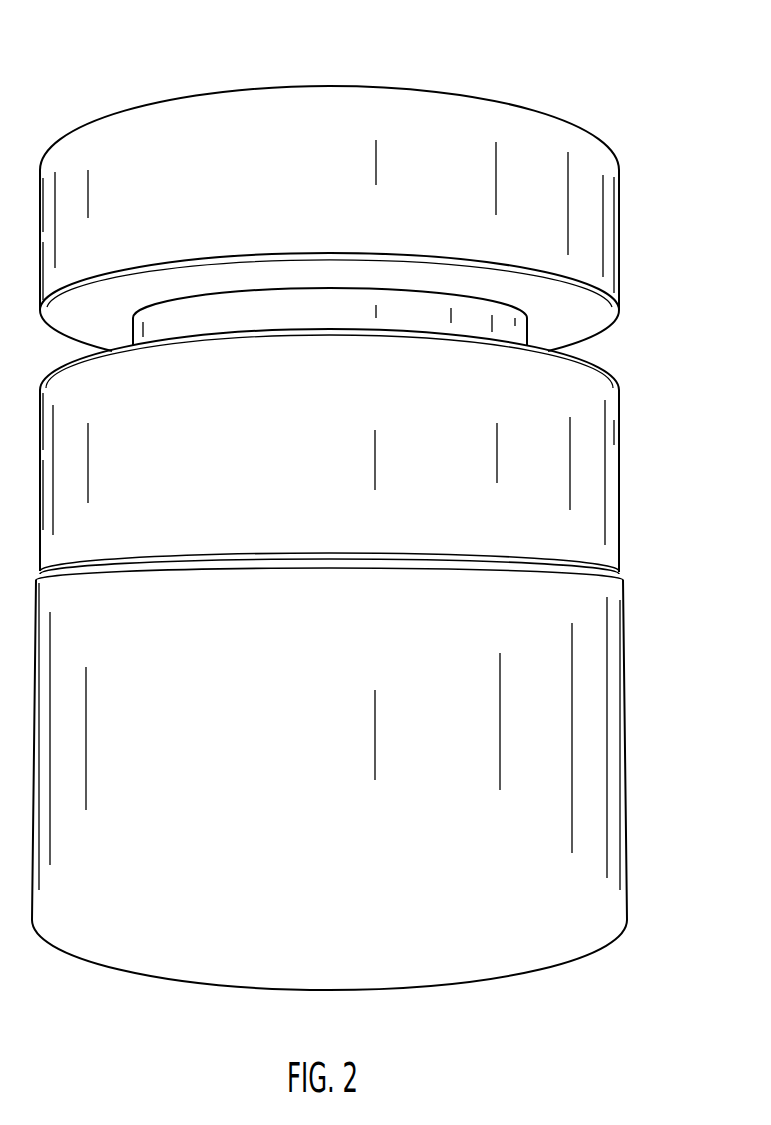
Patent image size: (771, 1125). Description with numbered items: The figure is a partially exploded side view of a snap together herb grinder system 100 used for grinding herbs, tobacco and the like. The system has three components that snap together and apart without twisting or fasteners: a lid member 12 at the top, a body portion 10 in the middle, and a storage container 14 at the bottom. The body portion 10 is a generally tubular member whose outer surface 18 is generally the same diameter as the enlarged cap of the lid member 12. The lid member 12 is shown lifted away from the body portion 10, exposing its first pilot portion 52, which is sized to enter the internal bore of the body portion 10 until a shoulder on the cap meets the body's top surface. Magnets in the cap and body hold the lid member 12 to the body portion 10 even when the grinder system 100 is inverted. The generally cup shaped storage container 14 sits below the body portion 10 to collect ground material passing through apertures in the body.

The herb grinder system 100 is at (52, 76).
The lid member 12 is at (607, 223).
The first pilot portion 52 is at (510, 327).
The body portion 10 is at (610, 415).
The outer surface 18 is at (610, 482).
The storage container 14 is at (612, 690).